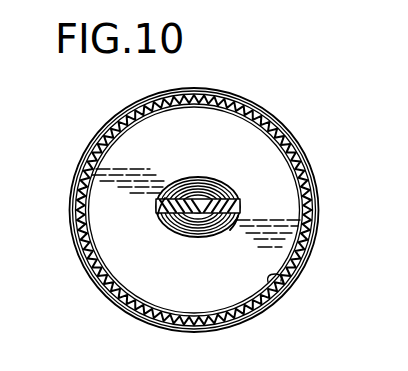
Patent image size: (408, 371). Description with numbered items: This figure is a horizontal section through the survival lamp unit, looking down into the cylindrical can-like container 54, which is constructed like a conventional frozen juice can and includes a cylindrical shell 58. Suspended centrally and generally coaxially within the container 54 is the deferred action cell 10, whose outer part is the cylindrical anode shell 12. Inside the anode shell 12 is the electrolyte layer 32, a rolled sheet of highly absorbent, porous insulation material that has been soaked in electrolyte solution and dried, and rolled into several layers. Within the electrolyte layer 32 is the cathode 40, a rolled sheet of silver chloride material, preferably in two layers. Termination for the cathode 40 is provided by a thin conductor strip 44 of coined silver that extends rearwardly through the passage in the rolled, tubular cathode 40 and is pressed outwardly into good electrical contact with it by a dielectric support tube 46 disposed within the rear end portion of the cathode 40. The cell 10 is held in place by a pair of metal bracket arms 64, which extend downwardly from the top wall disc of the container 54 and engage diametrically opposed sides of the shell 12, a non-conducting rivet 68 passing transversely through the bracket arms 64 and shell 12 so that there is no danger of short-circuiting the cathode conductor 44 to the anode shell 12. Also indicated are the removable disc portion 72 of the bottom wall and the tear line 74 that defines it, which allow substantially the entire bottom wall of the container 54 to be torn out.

The deferred action cell 10 is at (172, 238).
The cylindrical anode shell 12 is at (188, 239).
The electrolyte layer 32 is at (199, 176).
The cathode 40 is at (187, 184).
The conductor strip 44 is at (206, 239).
The dielectric support tube 46 is at (214, 184).
The cylindrical can-like container 54 is at (277, 119).
The cylindrical shell 58 is at (302, 147).
The bracket arms 64 is at (157, 223).
The non-conducting rivet 68 is at (238, 206).
The removable disc portion 72 is at (290, 210).
The tear line 74 is at (281, 279).